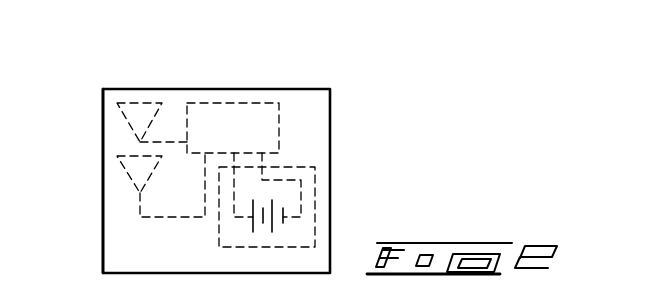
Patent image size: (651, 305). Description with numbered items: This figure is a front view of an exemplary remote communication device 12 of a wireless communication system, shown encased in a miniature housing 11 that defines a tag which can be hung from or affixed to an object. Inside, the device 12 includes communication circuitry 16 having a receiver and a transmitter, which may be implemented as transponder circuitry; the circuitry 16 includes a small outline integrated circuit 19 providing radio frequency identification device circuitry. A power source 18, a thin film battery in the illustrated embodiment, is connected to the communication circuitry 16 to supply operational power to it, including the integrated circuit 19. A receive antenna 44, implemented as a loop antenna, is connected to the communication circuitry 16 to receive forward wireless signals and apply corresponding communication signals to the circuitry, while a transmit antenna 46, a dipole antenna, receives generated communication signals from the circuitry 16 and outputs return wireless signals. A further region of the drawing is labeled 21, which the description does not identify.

The miniature housing 11 is at (103, 233).
The remote communication device 12 is at (352, 121).
The communication circuitry 16 is at (300, 110).
The power source 18 is at (315, 203).
The small outline integrated circuit 19 is at (252, 103).
The device surface region 21 is at (158, 262).
The receive antenna 44 is at (143, 103).
The transmit antenna 46 is at (125, 176).